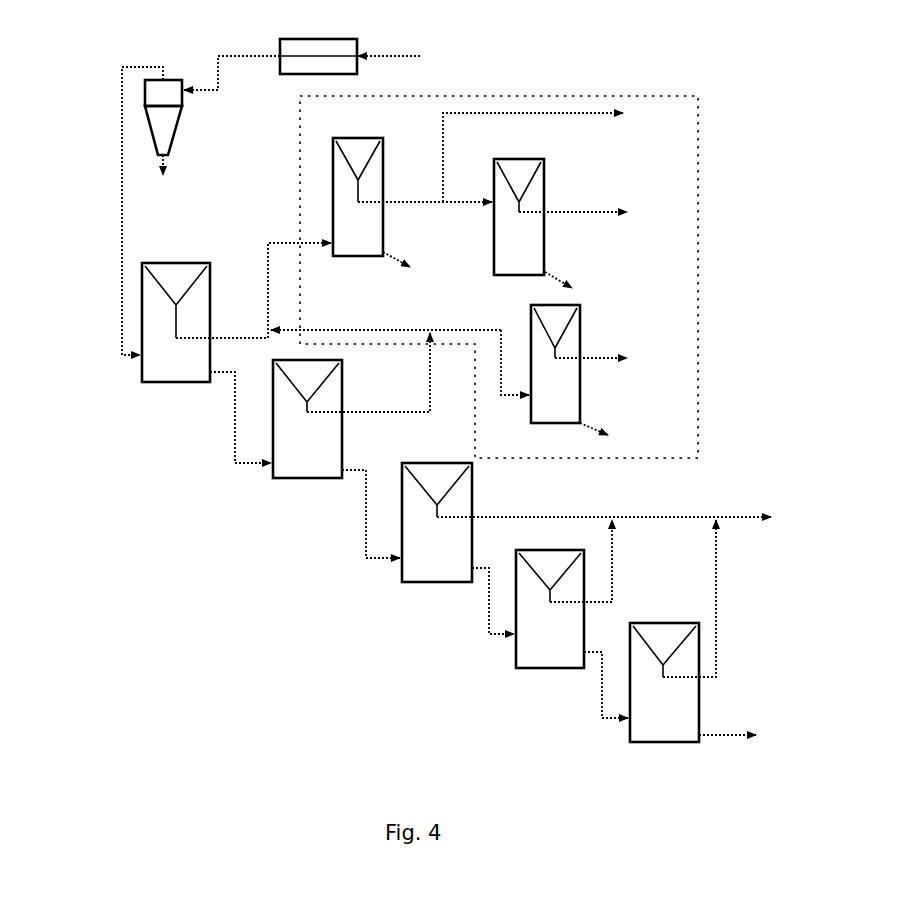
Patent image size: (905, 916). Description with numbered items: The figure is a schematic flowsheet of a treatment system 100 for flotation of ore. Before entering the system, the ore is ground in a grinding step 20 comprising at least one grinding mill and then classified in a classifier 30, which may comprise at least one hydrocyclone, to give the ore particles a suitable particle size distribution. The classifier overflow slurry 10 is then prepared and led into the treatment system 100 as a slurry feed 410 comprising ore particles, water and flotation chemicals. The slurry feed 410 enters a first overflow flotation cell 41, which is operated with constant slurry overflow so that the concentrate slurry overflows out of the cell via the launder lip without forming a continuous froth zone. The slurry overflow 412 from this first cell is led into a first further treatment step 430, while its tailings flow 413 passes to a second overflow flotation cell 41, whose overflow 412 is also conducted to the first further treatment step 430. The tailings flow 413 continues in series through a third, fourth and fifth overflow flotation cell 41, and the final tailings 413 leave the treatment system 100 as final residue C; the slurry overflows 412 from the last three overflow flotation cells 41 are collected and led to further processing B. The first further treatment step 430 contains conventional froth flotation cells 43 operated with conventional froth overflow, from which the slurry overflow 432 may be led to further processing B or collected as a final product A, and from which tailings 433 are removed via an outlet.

The slurry 10 is at (122, 241).
The grinding step 20 is at (327, 39).
The classifier 30 is at (182, 108).
The overflow flotation cell 41 is at (157, 382).
The flotation cell 43 is at (340, 257).
The treatment system 100 is at (752, 333).
The slurry feed 410 is at (140, 358).
The slurry overflow 412 is at (242, 327).
The tailings 413 is at (235, 405).
The first further treatment step 430 is at (700, 140).
The slurry overflow 432 is at (408, 202).
The tailings 433 is at (387, 253).